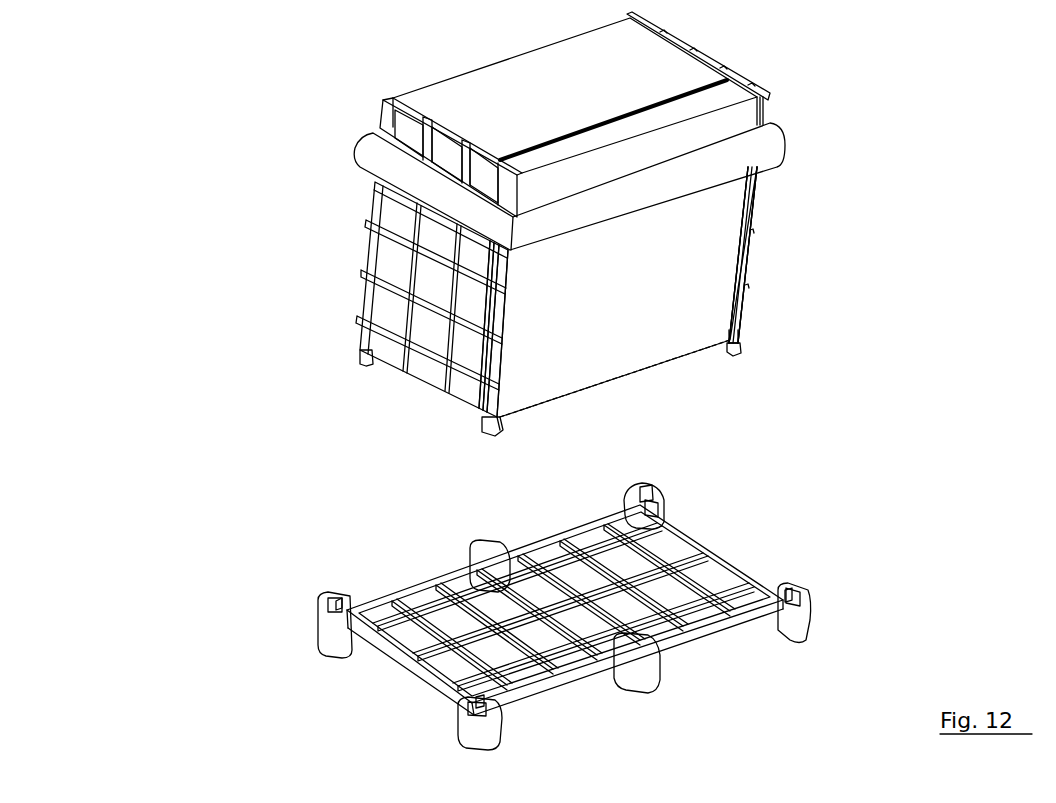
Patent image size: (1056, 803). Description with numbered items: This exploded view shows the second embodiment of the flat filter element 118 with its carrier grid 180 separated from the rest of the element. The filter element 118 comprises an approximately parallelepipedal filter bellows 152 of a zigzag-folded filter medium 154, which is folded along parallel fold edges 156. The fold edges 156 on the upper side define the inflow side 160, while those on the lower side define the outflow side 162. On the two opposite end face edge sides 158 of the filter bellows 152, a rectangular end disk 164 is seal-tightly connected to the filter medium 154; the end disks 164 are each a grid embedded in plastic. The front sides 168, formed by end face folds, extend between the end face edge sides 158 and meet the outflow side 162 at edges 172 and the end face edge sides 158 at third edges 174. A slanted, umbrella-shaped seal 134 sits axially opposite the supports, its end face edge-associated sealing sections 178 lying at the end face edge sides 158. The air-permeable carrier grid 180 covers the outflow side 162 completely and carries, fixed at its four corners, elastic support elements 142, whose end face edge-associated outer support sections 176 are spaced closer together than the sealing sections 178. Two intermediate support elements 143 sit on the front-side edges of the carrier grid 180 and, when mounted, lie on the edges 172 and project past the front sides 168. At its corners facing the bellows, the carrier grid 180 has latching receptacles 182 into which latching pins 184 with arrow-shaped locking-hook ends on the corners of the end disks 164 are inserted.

The filter element 118 is at (328, 78).
The seal 134 is at (374, 155).
The support elements 142 is at (652, 492).
The intermediate support elements 143 is at (496, 548).
The filter bellows 152 is at (722, 258).
The filter medium 154 is at (712, 313).
The fold edges 156 is at (540, 150).
The end face edge sides 158 is at (503, 340).
The inflow side 160 is at (655, 78).
The outflow side 162 is at (600, 384).
The end disks 164 is at (390, 262).
The front sides 168 is at (657, 330).
The edges 172 is at (624, 372).
The third edge 174 is at (512, 280).
The end face edge-associated outer support sections 176 is at (663, 512).
The end face edge-associated sealing sections 178 is at (395, 197).
The carrier grid 180 is at (725, 645).
The latching receptacle 182 is at (638, 494).
The latching pin 184 is at (362, 354).